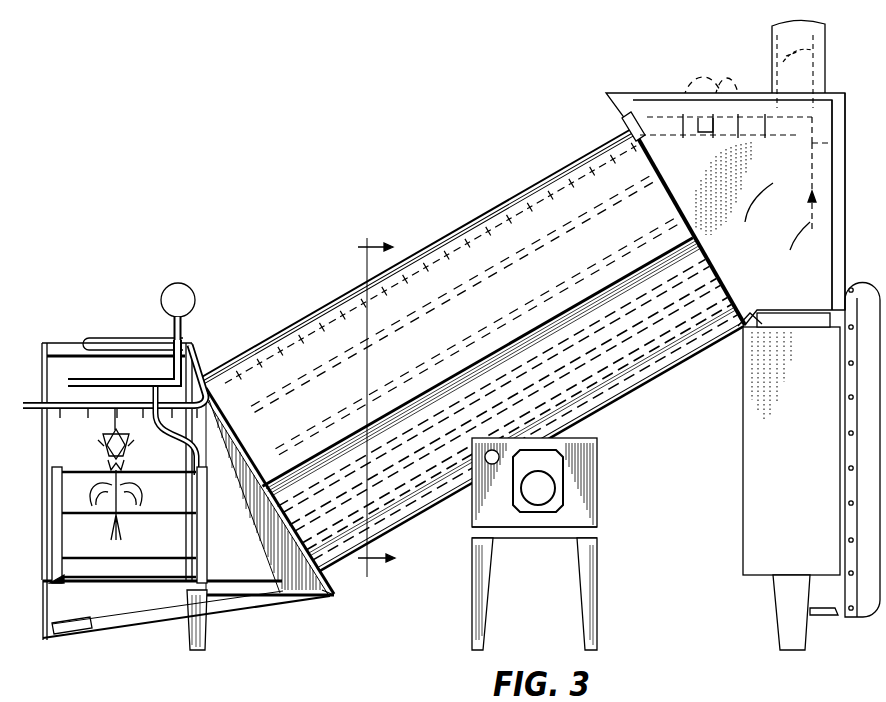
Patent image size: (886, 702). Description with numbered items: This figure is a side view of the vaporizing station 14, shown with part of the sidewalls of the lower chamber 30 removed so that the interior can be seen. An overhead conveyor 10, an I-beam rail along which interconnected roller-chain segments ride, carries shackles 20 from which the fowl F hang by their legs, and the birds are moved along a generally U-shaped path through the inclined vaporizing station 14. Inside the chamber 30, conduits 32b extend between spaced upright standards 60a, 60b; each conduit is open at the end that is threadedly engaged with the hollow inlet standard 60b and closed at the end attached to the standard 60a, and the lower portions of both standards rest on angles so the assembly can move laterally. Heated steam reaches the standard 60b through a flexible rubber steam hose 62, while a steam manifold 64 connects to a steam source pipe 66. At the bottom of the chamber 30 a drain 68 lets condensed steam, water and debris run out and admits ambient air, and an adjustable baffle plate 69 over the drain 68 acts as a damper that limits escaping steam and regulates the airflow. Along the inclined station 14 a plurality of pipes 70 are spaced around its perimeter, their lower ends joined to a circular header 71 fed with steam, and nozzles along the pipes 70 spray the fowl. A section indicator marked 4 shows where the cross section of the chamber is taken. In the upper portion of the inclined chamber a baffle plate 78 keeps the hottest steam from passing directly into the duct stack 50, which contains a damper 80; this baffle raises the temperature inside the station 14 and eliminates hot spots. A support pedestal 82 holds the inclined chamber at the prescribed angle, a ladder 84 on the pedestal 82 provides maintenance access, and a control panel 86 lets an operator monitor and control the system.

The conveyor 10 is at (31, 400).
The vaporizing station 14 is at (472, 356).
The shackles 20 is at (32, 412).
The chamber 30 is at (58, 312).
The conduits 32b is at (175, 578).
The section line 4- 4 is at (383, 407).
The duct stack 50 is at (772, 36).
The upright standard 60a is at (52, 535).
The hollow inlet standard 60b is at (200, 534).
The rubber steam hose 62 is at (188, 445).
The steam manifold 64 is at (148, 377).
The steam source pipe 66 is at (195, 272).
The drain 68 is at (44, 638).
The baffle plate 69 is at (80, 614).
The pipes 70 is at (672, 335).
The circular header 71 is at (335, 556).
The baffle plate 78 is at (842, 134).
The damper 80 is at (800, 47).
The support pedestal 82 is at (804, 443).
The ladder 84 is at (858, 600).
The control panel 86 is at (606, 498).
The fowl F is at (134, 494).